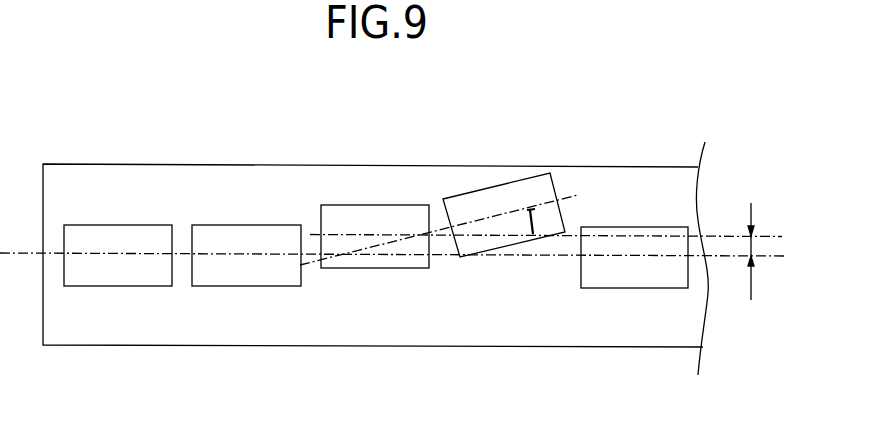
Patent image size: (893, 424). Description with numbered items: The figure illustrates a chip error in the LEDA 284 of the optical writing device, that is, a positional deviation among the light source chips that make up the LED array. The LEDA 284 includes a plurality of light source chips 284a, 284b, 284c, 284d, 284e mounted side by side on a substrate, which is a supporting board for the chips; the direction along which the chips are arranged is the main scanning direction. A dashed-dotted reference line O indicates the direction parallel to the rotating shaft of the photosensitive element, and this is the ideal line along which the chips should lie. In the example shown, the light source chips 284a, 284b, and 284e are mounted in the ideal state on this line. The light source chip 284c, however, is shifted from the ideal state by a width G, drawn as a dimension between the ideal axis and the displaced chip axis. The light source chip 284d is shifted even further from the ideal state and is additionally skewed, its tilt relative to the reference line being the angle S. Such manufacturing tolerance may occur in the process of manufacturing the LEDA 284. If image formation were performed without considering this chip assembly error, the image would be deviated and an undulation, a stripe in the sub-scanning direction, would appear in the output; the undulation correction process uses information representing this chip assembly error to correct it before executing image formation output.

The LEDA 284 is at (688, 165).
The light source chip 284a is at (95, 225).
The light source chip 284b is at (227, 225).
The light source chip 284c is at (352, 205).
The light source chip 284d is at (497, 187).
The light source chip 284e is at (613, 227).
The skew angle S is at (536, 225).
The shift width G is at (752, 243).
The dashed-dotted line indicating the direction parallel to the photosensitive eleme O is at (770, 258).